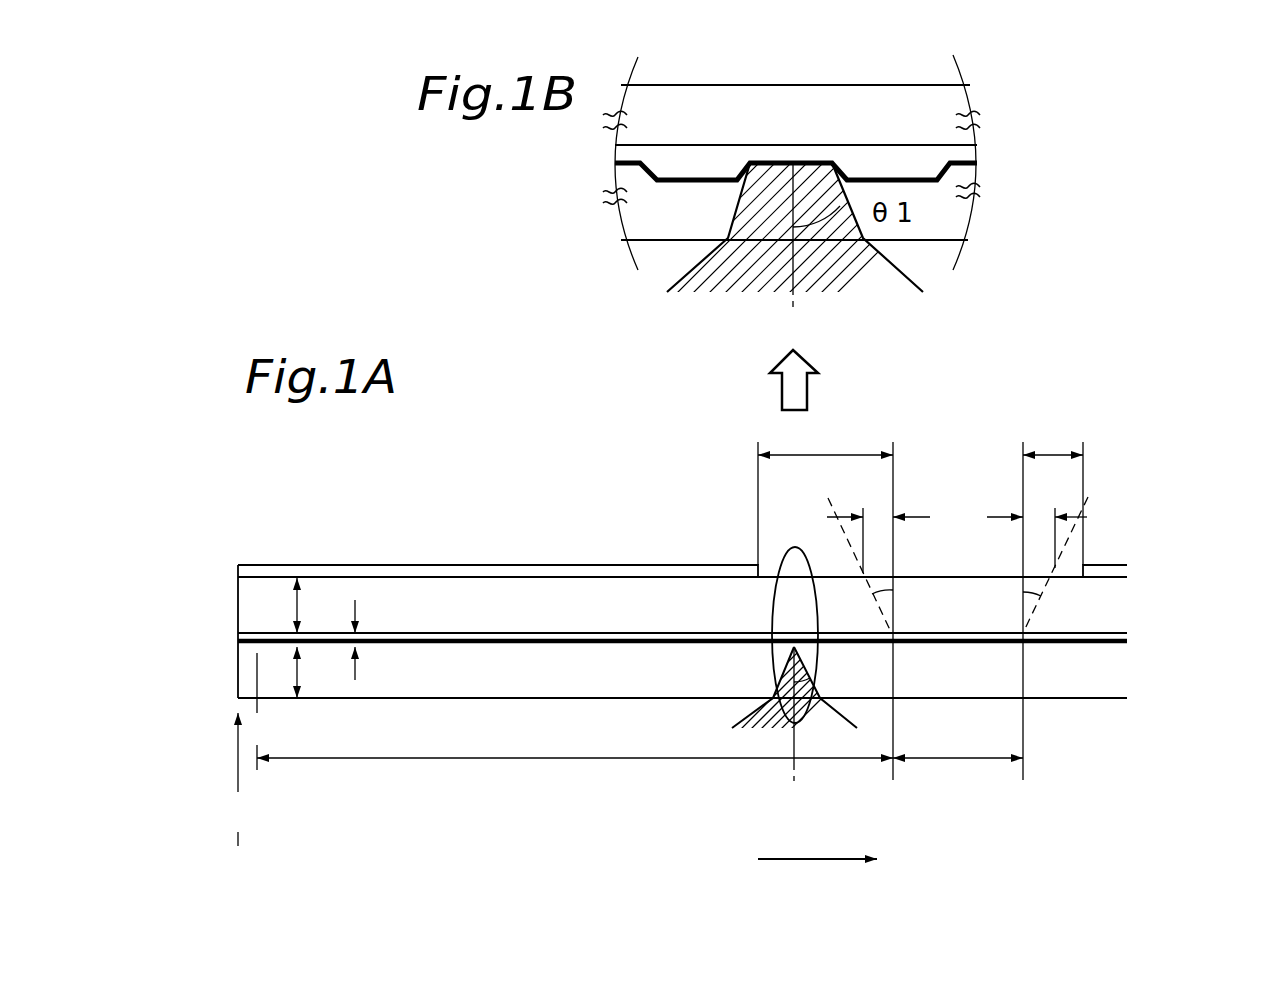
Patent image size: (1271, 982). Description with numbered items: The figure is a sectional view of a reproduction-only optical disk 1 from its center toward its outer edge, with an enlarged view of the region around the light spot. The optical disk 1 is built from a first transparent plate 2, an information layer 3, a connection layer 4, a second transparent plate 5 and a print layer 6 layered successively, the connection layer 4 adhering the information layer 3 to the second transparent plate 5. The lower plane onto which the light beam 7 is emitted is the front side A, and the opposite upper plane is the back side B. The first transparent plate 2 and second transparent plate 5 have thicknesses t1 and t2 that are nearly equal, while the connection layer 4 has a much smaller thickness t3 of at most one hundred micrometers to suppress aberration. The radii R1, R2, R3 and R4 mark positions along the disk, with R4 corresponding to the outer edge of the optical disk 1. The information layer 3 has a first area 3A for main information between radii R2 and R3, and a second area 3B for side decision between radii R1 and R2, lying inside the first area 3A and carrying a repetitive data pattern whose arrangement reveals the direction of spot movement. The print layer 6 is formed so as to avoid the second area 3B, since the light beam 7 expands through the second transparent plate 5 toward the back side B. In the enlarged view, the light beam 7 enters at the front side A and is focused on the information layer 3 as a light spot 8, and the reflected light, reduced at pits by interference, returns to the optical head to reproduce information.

In FIG. 1A, the optical disk 1 is at (198, 634).
In FIG. 1B, the first transparent plate 2 is at (970, 218).
In FIG. 1A, the first transparent plate 2 is at (1095, 687).
In FIG. 1B, the information layer 3 is at (977, 160).
In FIG. 1A, the information layer 3 is at (1127, 643).
In FIG. 1B, the connection layer 4 is at (977, 152).
In FIG. 1A, the connection layer 4 is at (1127, 633).
In FIG. 1B, the second transparent plate 5 is at (977, 100).
In FIG. 1A, the second transparent plate 5 is at (1113, 597).
In FIG. 1A, the print layer 6 is at (532, 565).
In FIG. 1B, the light beam 7 is at (740, 270).
In FIG. 1A, the light beam 7 is at (776, 722).
In FIG. 1B, the light spot 8 is at (812, 172).
In FIG. 1A, the front side A is at (342, 700).
In FIG. 1A, the back side B is at (297, 565).
In FIG. 1A, the thickness of first transparent plate t1 is at (316, 672).
In FIG. 1A, the thickness of second transparent plate t2 is at (316, 605).
In FIG. 1A, the thickness of adhesion layer t3 is at (373, 637).
In FIG. 1A, the radius R1 is at (1025, 611).
In FIG. 1A, the radius R2 is at (895, 611).
In FIG. 1A, the radius R3 is at (262, 699).
In FIG. 1A, the radius R4 is at (239, 779).
In FIG. 1A, the first area 3A is at (575, 769).
In FIG. 1A, the second area 3B is at (958, 776).